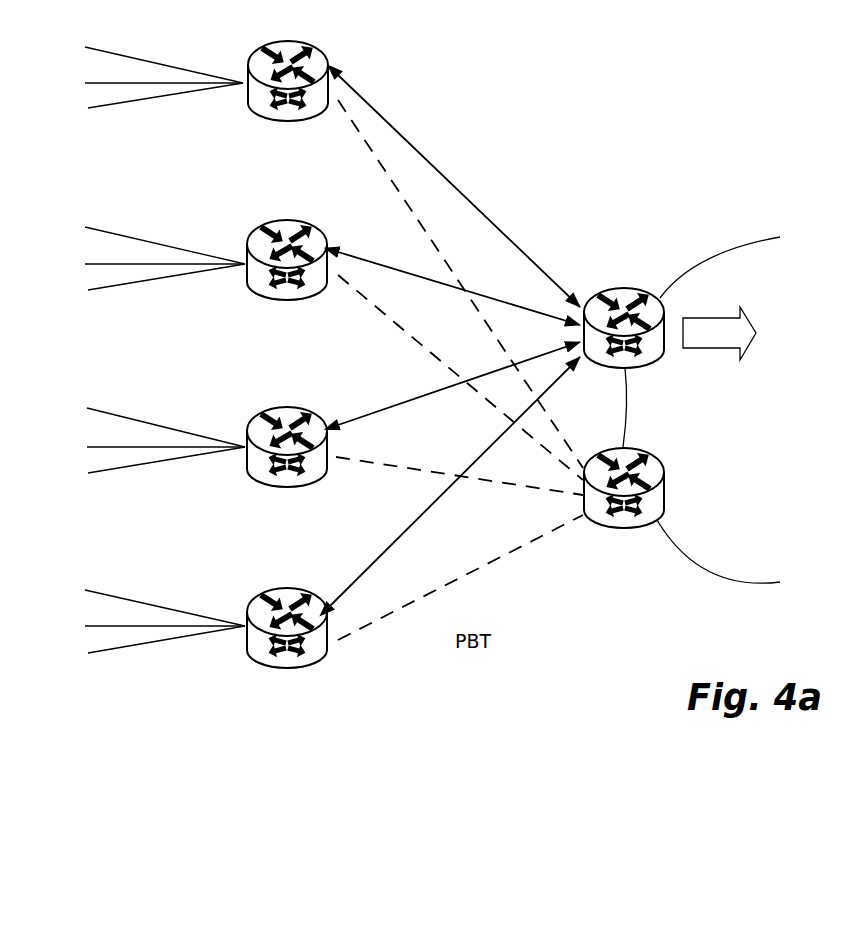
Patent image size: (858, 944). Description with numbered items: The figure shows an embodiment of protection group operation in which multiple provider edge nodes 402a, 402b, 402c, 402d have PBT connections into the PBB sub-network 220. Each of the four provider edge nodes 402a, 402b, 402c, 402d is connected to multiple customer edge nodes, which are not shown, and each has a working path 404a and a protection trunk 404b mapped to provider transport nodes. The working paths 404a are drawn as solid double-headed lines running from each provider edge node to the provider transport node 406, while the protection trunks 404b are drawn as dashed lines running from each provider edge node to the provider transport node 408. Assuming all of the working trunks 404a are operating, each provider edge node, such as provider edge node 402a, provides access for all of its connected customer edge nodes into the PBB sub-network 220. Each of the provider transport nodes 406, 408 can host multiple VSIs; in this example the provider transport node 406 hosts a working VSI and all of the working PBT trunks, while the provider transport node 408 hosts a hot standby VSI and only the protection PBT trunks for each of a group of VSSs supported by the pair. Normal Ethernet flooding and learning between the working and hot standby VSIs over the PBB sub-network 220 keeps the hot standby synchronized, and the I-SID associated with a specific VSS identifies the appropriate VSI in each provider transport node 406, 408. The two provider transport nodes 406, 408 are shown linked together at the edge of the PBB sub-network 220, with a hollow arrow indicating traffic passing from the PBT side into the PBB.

The provider edge node 402a is at (252, 68).
The provider edge node 402b is at (256, 250).
The provider edge node 402c is at (256, 436).
The provider edge node 402d is at (259, 616).
The working path 404a is at (415, 129).
The protection trunk 404b is at (425, 216).
The provider transport node 406 is at (627, 287).
The provider transport node 408 is at (660, 458).
The PBB sub-network 220 is at (748, 238).